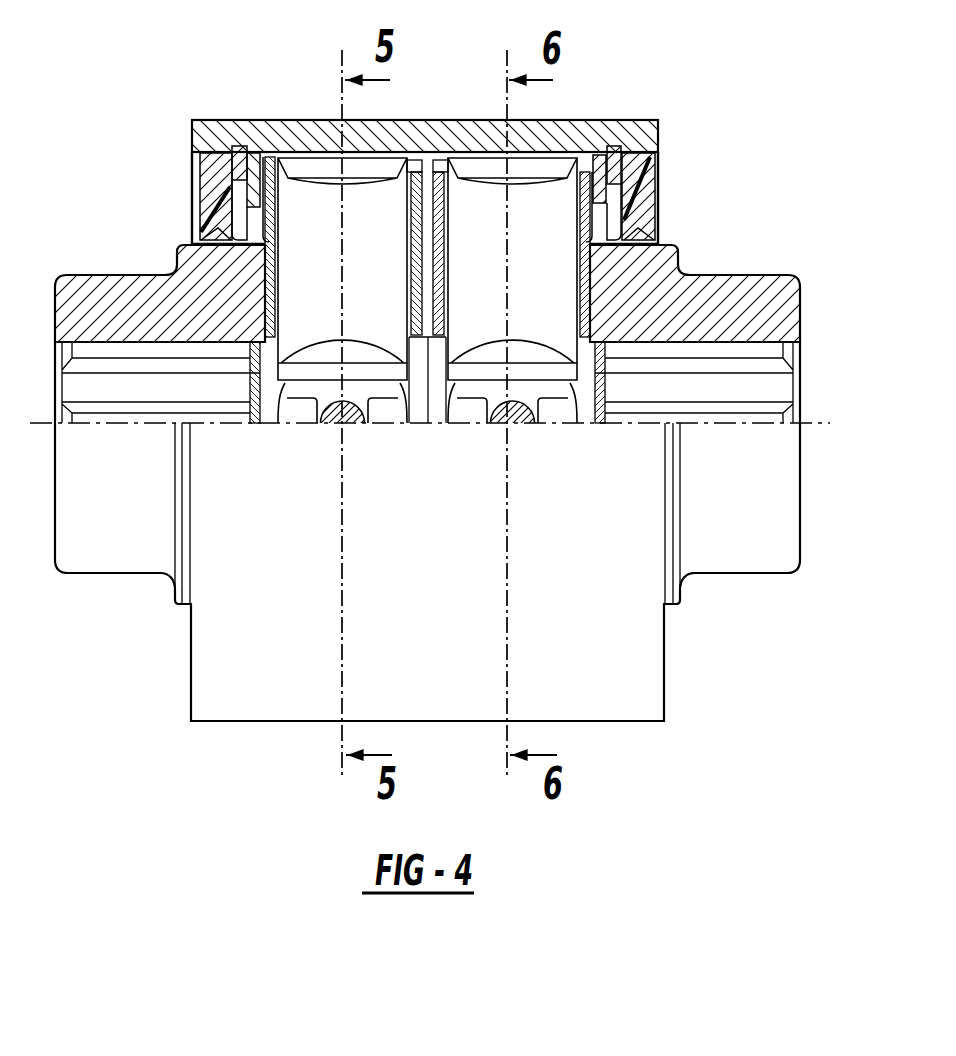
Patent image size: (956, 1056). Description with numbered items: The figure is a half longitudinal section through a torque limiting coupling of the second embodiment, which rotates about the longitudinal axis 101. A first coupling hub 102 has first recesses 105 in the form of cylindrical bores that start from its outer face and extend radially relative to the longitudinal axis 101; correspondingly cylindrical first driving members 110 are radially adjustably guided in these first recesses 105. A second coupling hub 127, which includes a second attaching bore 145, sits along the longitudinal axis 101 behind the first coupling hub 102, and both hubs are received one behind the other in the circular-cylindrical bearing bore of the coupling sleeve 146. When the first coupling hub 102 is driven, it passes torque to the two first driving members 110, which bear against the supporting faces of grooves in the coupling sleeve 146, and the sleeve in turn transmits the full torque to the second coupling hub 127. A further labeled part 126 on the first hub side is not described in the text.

The longitudinal axis 101 is at (287, 426).
The first coupling hub 102 is at (108, 542).
The first recesses 105 is at (280, 275).
The first driving members 110 is at (395, 277).
The left annular groove portion 126 is at (125, 358).
The second coupling hub 127 is at (743, 532).
The second attaching bore 145 is at (692, 350).
The coupling sleeve 146 is at (418, 124).